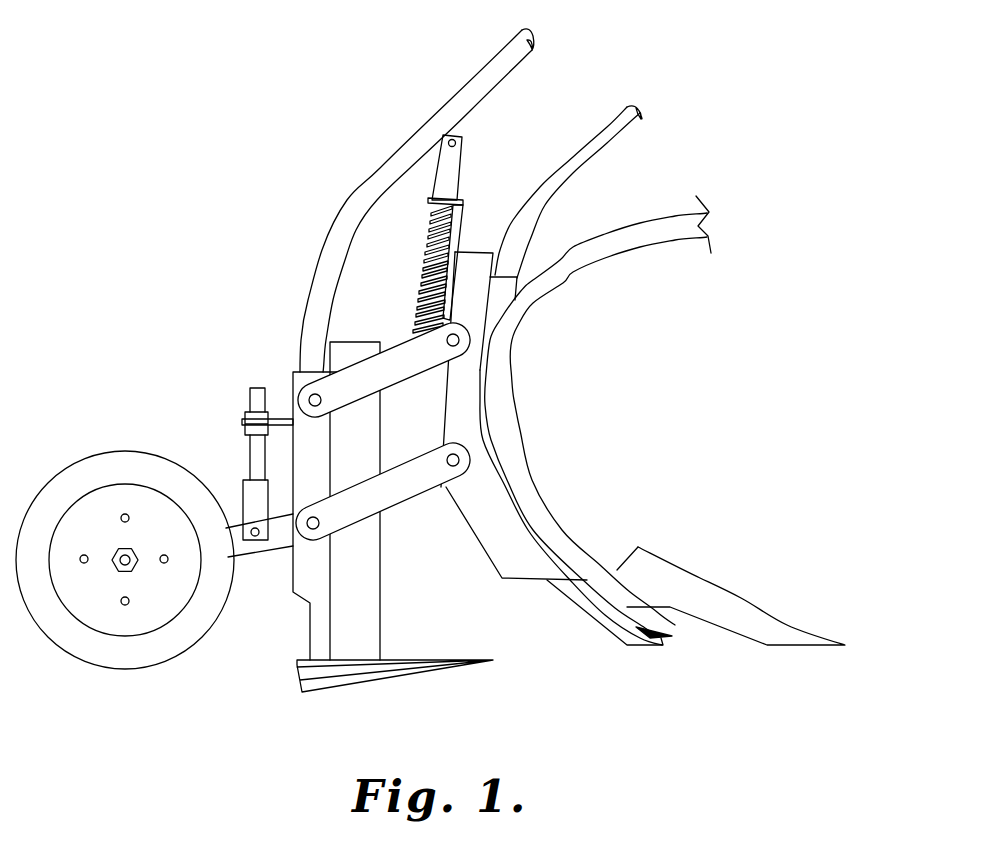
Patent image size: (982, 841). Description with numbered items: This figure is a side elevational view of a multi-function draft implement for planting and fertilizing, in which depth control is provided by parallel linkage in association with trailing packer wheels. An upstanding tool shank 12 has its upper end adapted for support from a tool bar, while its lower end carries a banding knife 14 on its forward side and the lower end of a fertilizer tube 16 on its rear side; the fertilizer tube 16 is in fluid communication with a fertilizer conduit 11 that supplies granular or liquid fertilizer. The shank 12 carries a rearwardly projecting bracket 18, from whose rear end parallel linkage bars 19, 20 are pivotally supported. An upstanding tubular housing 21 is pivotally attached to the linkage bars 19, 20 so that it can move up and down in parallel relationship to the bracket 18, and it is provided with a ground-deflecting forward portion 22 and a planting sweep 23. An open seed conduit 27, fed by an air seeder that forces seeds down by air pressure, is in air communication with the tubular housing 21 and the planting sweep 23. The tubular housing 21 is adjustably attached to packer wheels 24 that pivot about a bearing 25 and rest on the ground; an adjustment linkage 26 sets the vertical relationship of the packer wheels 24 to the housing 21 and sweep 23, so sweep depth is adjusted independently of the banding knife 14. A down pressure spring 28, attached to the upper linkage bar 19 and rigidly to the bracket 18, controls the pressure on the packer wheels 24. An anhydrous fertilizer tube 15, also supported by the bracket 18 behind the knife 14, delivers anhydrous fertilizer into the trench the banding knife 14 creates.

The fertilizer conduit 11 is at (583, 145).
The tool shank 12 is at (507, 408).
The banding knife 14 is at (712, 607).
The anhydrous fertilizer tube 15 is at (672, 632).
The fertilizer tube 16 is at (577, 598).
The bracket 18 is at (258, 268).
The parallel linkage bar 19 is at (393, 355).
The parallel linkage bar 20 is at (383, 491).
The tubular housing 21 is at (307, 438).
The ground-deflecting forward portion 22 is at (377, 448).
The planting sweep 23 is at (382, 670).
The packer wheels 24 is at (108, 460).
The bearing 25 is at (137, 553).
The adjustment linkage 26 is at (255, 444).
The conduit 27 is at (373, 183).
The down pressure spring 28 is at (425, 238).